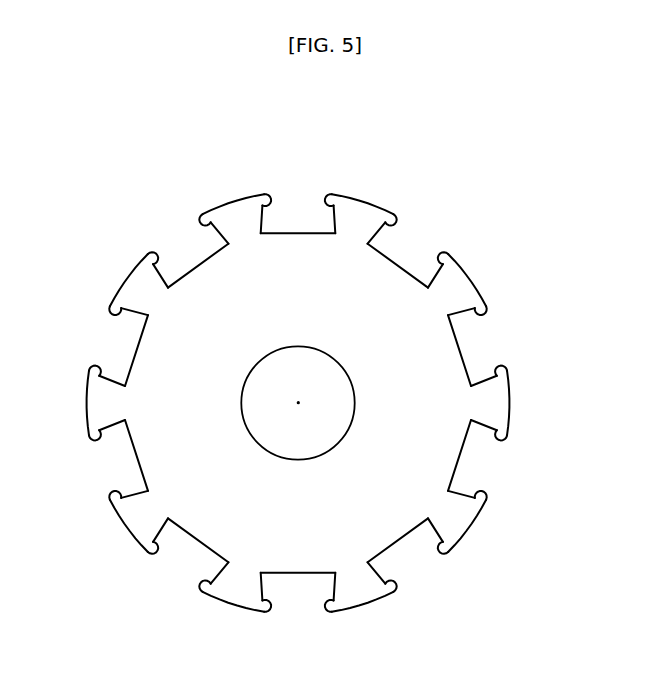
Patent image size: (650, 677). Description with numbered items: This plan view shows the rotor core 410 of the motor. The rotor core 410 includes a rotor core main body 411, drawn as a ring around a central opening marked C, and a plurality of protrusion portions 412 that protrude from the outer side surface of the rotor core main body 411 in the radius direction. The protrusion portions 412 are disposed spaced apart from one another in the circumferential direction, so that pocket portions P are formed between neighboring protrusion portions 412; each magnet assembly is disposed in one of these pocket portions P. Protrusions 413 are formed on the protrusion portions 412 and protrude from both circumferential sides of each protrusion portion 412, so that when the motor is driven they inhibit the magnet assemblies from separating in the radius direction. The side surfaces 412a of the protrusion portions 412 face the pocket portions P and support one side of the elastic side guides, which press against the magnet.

The rotor core 410 is at (70, 137).
The rotor core main body 411 is at (347, 520).
The protrusion portion 412 is at (460, 282).
The side surface of protrusion portion 412a is at (432, 262).
The protrusion 413 is at (452, 250).
The pocket portion P is at (477, 338).
The center C is at (298, 418).